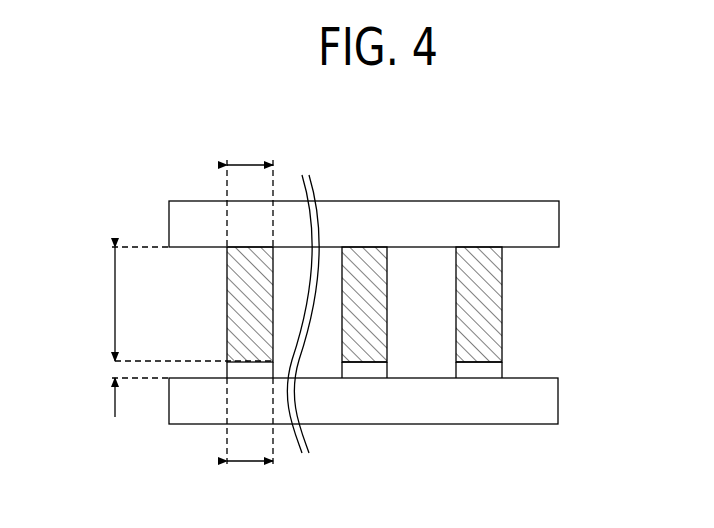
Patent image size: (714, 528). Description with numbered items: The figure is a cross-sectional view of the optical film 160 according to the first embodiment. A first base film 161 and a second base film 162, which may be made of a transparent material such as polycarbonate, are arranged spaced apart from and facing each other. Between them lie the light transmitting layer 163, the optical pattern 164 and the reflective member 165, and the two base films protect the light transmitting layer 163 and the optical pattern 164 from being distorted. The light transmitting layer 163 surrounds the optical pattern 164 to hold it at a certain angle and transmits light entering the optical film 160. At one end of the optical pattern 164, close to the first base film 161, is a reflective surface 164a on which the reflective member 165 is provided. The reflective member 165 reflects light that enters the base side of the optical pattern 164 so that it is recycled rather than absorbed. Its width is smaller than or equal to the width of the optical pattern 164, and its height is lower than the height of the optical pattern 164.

The optical film 160 is at (88, 145).
The first base film 161 is at (550, 402).
The second base film 162 is at (552, 223).
The light transmitting layer 163 is at (418, 273).
The optical pattern 164 is at (493, 297).
The reflective surface 164a is at (490, 358).
The reflective member 165 is at (480, 370).